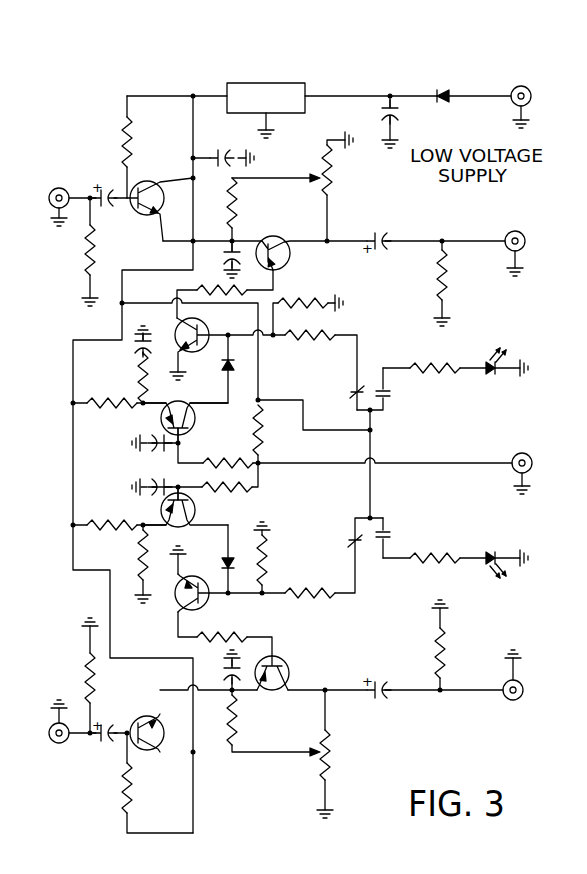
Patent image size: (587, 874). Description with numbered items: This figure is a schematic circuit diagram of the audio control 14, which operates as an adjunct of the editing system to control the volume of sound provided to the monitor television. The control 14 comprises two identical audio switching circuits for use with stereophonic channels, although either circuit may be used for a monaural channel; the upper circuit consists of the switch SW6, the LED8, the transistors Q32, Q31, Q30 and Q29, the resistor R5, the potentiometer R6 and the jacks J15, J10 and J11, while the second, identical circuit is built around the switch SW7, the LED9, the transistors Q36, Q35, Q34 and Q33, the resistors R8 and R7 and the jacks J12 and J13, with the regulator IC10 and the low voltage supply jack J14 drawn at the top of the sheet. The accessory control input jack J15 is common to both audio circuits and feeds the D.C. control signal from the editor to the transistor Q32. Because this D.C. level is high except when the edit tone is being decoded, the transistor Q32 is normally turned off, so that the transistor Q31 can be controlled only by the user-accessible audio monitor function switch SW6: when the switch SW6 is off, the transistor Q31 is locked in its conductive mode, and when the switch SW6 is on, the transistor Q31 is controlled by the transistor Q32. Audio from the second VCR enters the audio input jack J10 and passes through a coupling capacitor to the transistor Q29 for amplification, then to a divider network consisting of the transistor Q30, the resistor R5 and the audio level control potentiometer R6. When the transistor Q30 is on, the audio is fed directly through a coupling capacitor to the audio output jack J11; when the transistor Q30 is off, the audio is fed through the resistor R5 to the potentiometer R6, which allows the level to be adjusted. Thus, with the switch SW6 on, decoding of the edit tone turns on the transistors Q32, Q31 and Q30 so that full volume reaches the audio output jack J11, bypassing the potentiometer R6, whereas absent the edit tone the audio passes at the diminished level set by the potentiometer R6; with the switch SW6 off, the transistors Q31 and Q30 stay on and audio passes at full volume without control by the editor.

The voltage regulator IC IC10 is at (266, 110).
The low voltage supply jack J14 is at (532, 107).
The audio input jack J10 is at (54, 197).
The audio output jack J11 is at (532, 253).
The accessory control input jack J15 is at (537, 473).
The output jack J13 is at (530, 675).
The input jack J12 is at (56, 734).
The transistor Q29 is at (160, 199).
The transistor Q30 is at (291, 243).
The transistor Q31 is at (207, 345).
The transistor Q32 is at (185, 413).
The transistor Q33 is at (141, 725).
The transistor Q34 is at (291, 672).
The transistor Q35 is at (196, 585).
The transistor Q36 is at (189, 507).
The resistor R5 is at (263, 207).
The audio level control potentiometer R6 is at (341, 188).
The potentiometer R7 is at (338, 754).
The potentiometer R8 is at (264, 723).
The audio monitor function switch SW6 is at (366, 443).
The switch SW7 is at (366, 528).
The LED LED8 is at (455, 372).
The light emitting diode LED9 is at (455, 557).
The audio control 14 is at (434, 752).